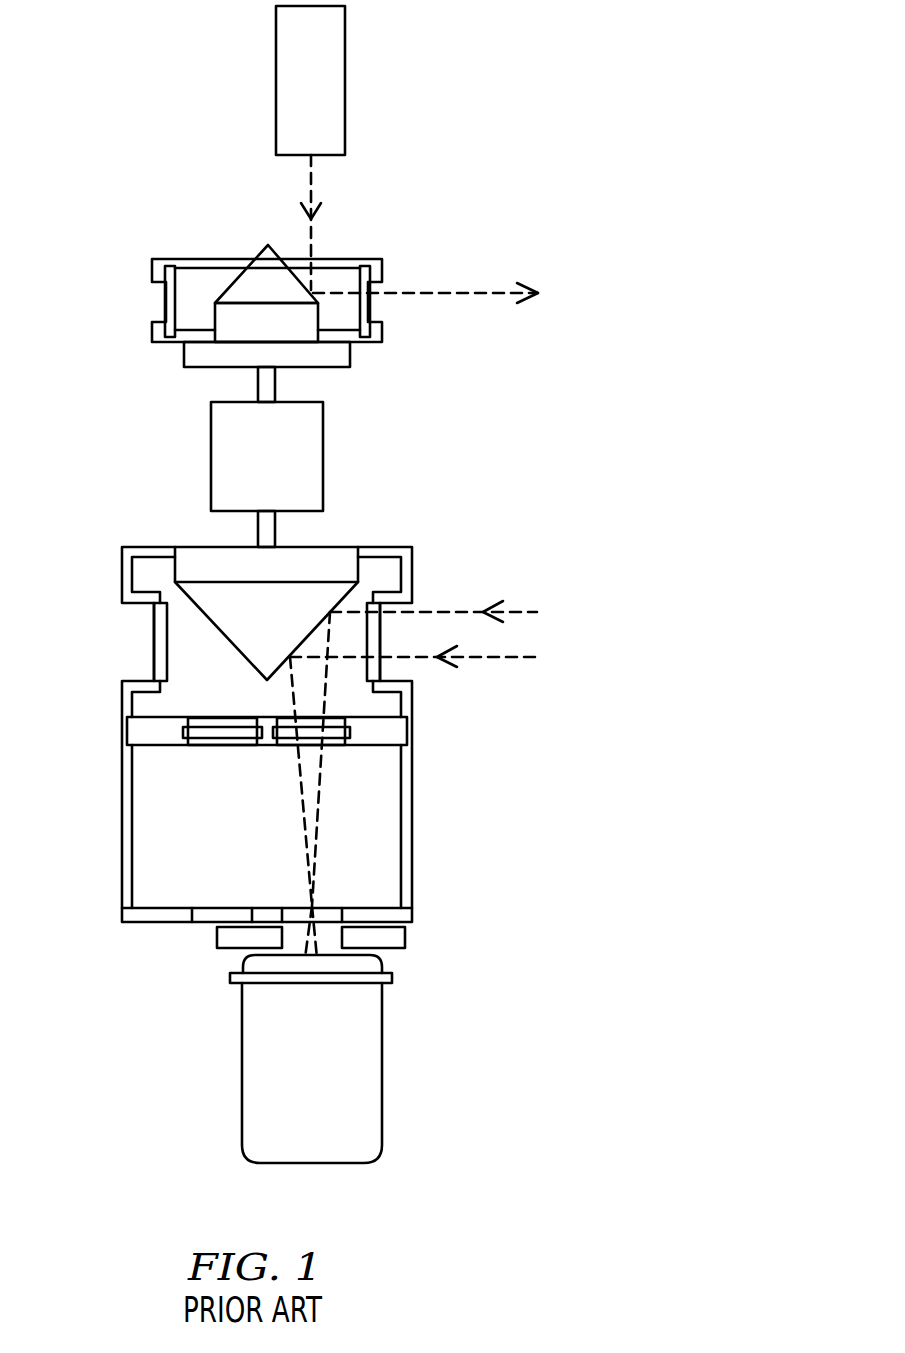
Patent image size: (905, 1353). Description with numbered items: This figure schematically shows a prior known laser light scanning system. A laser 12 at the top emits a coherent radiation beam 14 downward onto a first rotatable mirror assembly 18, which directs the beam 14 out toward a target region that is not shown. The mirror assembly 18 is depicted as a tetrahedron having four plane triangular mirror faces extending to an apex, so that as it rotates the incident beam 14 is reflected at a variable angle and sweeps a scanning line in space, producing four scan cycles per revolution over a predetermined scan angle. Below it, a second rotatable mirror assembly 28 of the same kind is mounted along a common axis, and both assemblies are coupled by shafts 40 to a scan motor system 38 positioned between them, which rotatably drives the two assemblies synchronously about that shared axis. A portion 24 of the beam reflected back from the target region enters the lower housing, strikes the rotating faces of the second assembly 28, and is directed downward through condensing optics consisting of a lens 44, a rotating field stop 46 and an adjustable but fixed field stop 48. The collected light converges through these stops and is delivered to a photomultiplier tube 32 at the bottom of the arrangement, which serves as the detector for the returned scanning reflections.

The laser 12 is at (345, 80).
The coherent radiation beam 14 is at (311, 190).
The first rotatable mirror assembly 18 is at (212, 313).
The shafts 40 is at (275, 383).
The scan motor system 38 is at (323, 457).
The second rotatable mirror assembly 28 is at (220, 632).
The portion of the beam 24 is at (485, 633).
The lens 44 is at (307, 717).
The rotating field stop 46 is at (322, 907).
The adjustable field stop 48 is at (223, 948).
The photomultiplier tube 32 is at (382, 1065).